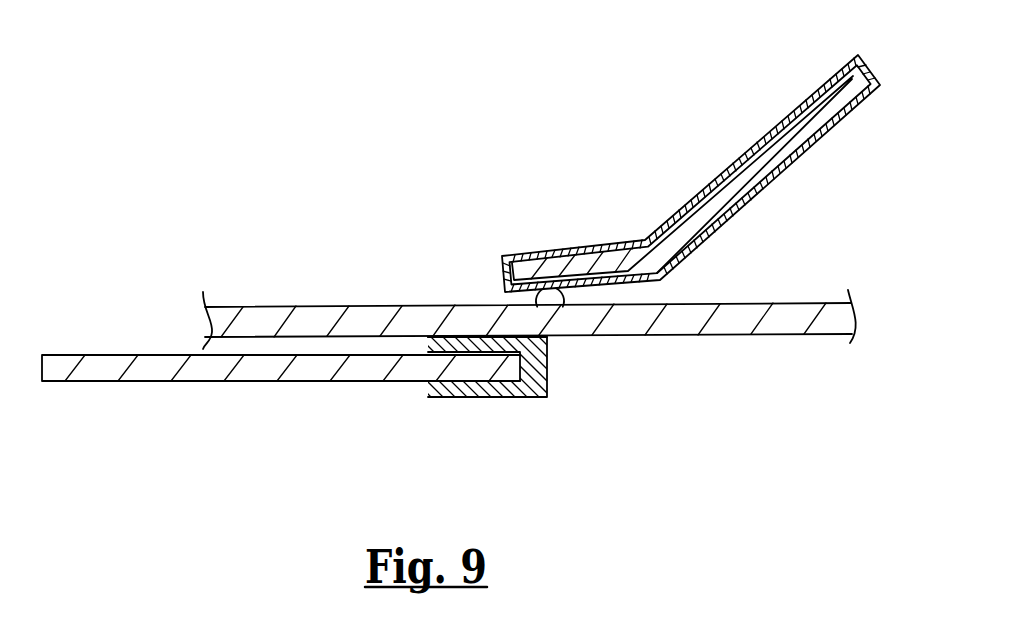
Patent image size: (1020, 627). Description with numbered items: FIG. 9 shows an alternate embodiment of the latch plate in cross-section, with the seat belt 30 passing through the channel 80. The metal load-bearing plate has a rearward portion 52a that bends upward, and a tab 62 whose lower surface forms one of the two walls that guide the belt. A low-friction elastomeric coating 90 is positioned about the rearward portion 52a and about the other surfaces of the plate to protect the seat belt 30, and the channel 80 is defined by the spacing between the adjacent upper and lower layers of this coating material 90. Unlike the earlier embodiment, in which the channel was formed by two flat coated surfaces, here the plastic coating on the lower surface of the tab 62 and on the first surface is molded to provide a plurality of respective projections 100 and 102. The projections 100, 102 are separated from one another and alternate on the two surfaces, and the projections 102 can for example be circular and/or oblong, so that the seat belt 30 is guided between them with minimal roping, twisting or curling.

The seat belt 30 is at (833, 318).
The rearward portion of the plate 52a is at (747, 167).
The tab 62 is at (590, 262).
The channel 80 is at (548, 340).
The coating 90 is at (547, 248).
The projections 100 is at (536, 300).
The projections 102 is at (548, 365).